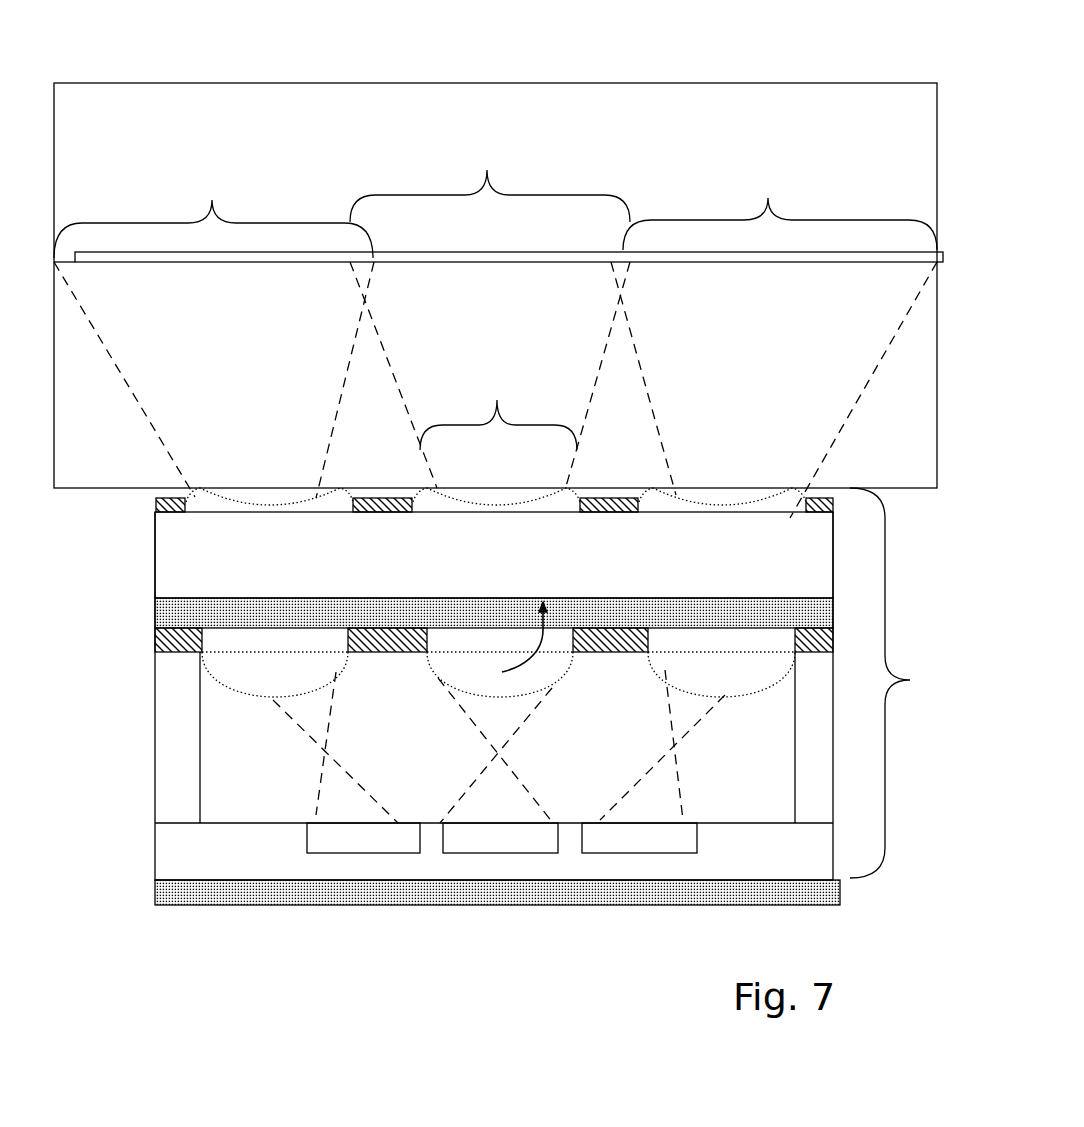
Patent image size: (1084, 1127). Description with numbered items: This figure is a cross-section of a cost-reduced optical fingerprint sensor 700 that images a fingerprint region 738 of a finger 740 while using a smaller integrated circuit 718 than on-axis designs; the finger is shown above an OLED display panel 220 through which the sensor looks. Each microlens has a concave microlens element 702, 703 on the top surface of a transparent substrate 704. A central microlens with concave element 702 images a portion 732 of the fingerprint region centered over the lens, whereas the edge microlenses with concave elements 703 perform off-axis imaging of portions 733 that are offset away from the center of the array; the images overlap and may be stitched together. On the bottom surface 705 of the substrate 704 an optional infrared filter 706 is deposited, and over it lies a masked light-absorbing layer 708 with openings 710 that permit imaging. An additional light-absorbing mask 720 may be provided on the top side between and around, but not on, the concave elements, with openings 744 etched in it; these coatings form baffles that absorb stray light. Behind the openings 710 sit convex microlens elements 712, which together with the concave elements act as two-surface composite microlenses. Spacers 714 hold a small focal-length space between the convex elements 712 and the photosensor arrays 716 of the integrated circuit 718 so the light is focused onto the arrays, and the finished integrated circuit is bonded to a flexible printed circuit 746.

The optical fingerprint sensor 700 is at (804, 63).
The finger 740 is at (495, 128).
The portion of fingerprint region 732 is at (490, 184).
The outer finger imaging regions 733 is at (495, 215).
The fingerprint region 738 is at (795, 257).
The OLED display panel 220 is at (547, 358).
The openings 744 is at (498, 413).
The concave microlens element 703 is at (217, 504).
The concave microlens element 702 is at (450, 500).
The additional light-absorbing mask 720 is at (598, 498).
The transparent substrate 704 is at (628, 578).
The infrared filter 706 is at (668, 613).
The masked light-absorbing layer 708 is at (153, 637).
The openings 710 is at (275, 638).
The bottom surface 705 is at (504, 642).
The convex microlens elements 712 is at (255, 670).
The spacers 714 is at (165, 748).
The photosensor arrays 716 is at (367, 840).
The integrated circuit 718 is at (220, 855).
The flexible printed circuit 746 is at (722, 892).